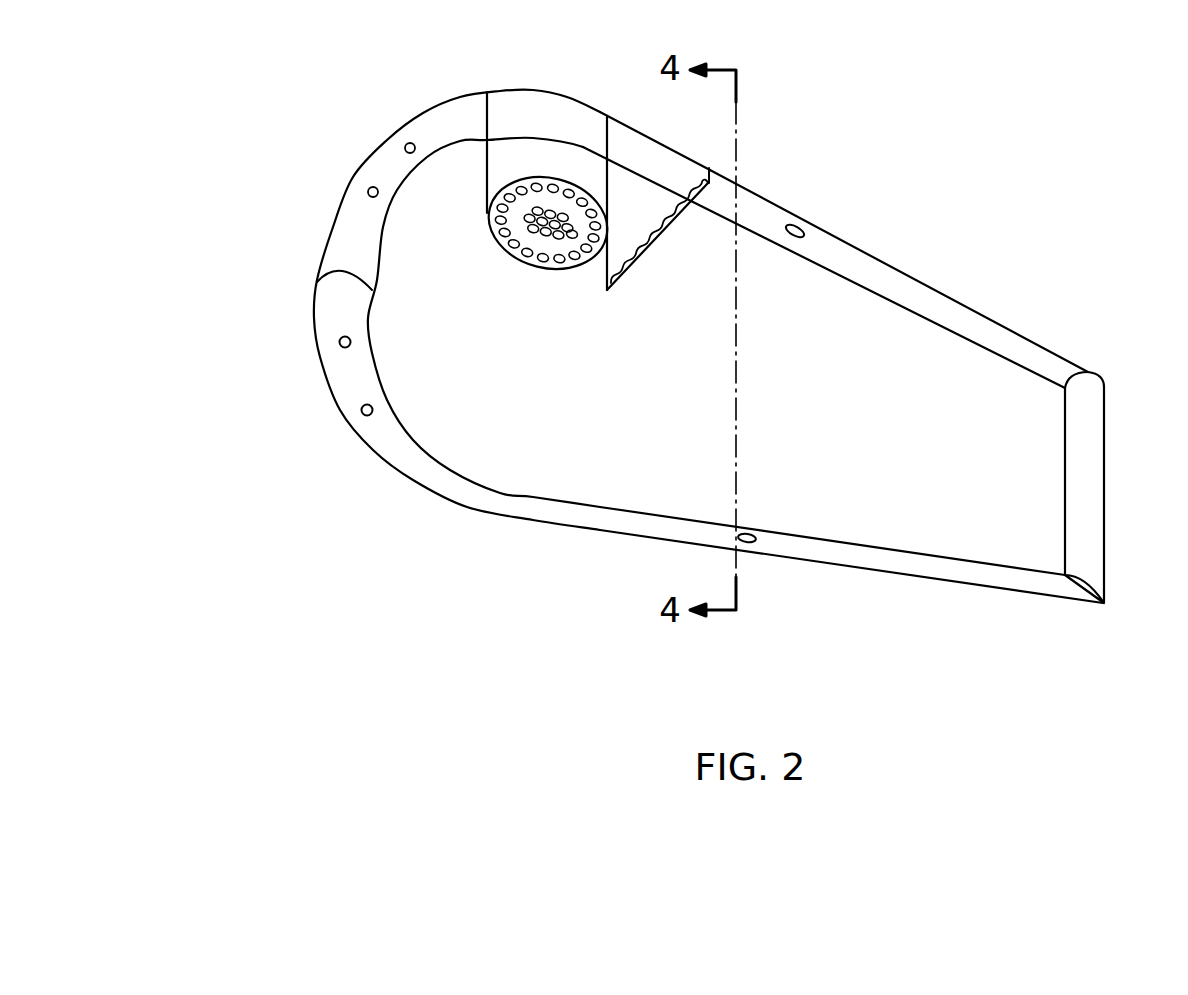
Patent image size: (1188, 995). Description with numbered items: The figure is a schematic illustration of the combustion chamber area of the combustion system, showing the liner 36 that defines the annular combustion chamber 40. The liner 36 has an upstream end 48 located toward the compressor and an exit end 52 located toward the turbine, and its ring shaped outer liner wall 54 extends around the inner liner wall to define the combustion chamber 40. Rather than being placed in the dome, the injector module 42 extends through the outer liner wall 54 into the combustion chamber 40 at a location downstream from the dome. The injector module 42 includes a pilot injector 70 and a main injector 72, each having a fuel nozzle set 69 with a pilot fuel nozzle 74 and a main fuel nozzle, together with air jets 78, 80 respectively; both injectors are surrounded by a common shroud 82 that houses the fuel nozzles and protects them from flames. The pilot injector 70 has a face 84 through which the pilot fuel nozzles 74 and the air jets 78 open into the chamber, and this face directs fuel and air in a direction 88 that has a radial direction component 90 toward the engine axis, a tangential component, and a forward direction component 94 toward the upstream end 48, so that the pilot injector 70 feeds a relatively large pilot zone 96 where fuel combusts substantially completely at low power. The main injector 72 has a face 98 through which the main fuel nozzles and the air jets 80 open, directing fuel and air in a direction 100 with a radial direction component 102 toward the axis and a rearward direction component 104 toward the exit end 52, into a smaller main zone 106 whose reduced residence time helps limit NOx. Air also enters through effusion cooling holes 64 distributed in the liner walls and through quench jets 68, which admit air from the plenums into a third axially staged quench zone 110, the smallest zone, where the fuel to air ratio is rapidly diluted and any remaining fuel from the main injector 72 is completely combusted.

The liner 36 is at (886, 266).
The combustion chamber 40 is at (556, 451).
The injector module 42 is at (540, 125).
The upstream end 48 is at (317, 265).
The exit end 52 is at (1100, 377).
The outer liner wall 54 is at (812, 226).
The effusion cooling holes 64 is at (408, 143).
The quench jets 68 is at (815, 258).
The fuel nozzle set 69 is at (704, 217).
The pilot injector 70 is at (520, 140).
The main injector 72 is at (680, 186).
The pilot fuel nozzle 74 is at (557, 237).
The air jets 78 is at (501, 198).
The air jets 80 is at (712, 174).
The shroud 82 is at (582, 180).
The face 84 is at (532, 216).
The direction 88 is at (535, 227).
The radial direction component 90 is at (535, 227).
The forward direction component 94 is at (535, 227).
The pilot zone 96 is at (409, 381).
The face 98 is at (664, 224).
The direction 100 is at (684, 252).
The radial direction component 102 is at (668, 230).
The rearward direction component 104 is at (668, 230).
The main zone 106 is at (668, 230).
The quench zone 110 is at (872, 480).